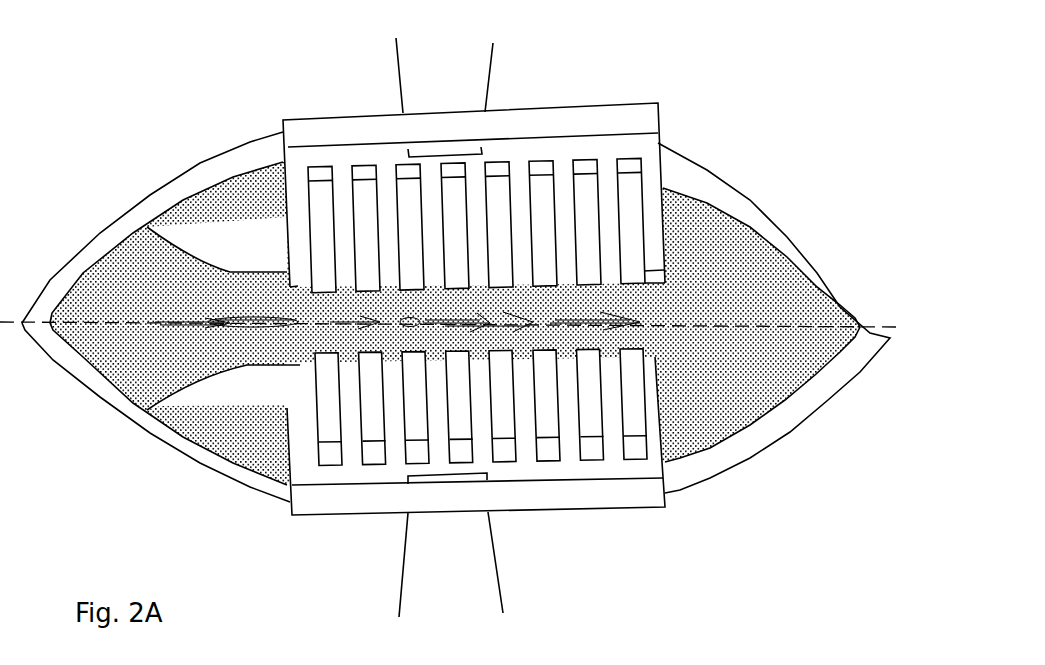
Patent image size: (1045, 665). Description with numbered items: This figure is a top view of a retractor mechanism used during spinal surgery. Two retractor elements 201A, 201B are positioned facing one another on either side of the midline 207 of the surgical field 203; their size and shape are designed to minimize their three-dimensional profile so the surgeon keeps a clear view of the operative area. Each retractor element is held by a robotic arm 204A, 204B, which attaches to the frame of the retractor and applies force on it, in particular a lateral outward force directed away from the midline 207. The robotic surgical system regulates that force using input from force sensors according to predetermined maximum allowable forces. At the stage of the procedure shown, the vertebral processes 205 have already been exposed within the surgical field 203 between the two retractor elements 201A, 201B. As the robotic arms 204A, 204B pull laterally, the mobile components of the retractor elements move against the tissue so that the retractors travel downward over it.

The retractor element 201A is at (600, 123).
The retractor element 201B is at (638, 502).
The surgical field 203 is at (263, 238).
The robotic arm 204A is at (490, 87).
The robotic arm 204B is at (497, 562).
The vertebral processes 205 is at (257, 328).
The midline 207 is at (80, 278).